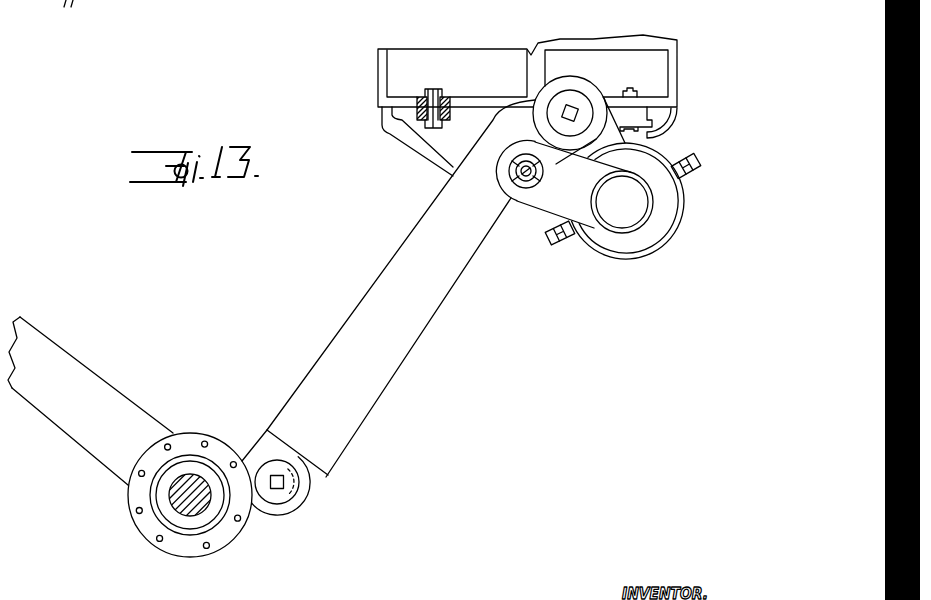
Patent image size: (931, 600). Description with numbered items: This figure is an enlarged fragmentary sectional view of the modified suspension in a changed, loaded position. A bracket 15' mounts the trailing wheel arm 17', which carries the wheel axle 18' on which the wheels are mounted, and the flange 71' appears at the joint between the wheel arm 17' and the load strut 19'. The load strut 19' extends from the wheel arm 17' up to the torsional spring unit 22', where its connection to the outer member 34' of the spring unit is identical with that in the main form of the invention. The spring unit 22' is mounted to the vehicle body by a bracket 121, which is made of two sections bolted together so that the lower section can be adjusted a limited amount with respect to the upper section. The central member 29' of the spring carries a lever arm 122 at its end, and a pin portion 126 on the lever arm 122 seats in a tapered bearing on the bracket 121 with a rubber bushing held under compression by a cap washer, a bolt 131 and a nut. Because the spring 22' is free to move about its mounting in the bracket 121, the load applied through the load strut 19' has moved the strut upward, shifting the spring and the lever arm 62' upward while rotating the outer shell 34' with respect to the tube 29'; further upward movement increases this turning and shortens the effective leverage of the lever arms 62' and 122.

The bracket 121 is at (518, 90).
The lever arm 62' is at (585, 105).
The load strut 19' is at (433, 287).
The pin portion 126 is at (522, 190).
The lever arm 122 is at (551, 193).
The bolt 131 is at (512, 176).
The outer member 34' is at (630, 214).
The central member 29' is at (665, 208).
The torsional spring unit 22' is at (608, 246).
The trailing wheel arm 17' is at (90, 401).
The bracket 15' is at (333, 486).
The flange 71' is at (206, 512).
The wheel axle 18' is at (138, 512).